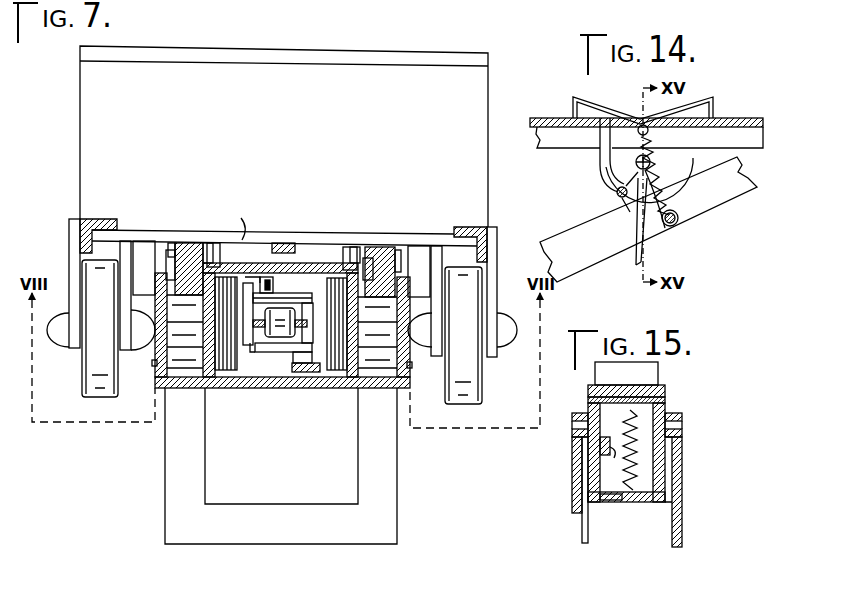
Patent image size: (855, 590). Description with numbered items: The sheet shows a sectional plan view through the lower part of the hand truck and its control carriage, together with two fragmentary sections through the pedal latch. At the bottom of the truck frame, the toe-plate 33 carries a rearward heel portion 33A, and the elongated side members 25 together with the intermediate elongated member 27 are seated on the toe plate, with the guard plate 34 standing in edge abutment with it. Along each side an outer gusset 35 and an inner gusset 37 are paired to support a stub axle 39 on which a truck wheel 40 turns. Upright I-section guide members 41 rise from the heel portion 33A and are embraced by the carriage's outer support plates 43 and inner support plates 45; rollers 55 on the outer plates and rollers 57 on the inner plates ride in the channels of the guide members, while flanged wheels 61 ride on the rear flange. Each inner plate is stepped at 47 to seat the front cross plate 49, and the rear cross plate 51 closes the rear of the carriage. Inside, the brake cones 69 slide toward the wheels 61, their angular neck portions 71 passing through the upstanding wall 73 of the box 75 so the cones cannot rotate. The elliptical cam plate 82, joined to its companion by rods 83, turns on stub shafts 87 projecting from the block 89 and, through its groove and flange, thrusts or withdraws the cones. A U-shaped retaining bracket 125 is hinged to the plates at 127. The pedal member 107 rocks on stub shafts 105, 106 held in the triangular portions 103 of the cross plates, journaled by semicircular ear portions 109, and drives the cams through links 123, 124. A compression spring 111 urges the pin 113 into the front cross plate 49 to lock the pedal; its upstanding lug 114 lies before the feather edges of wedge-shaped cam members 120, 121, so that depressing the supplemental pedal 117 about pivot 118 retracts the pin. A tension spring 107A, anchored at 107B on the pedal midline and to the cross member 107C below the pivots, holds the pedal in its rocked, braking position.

In FIG. 7, the toe-plate 33 is at (271, 149).
In FIG. 7, the heel portion 33A is at (142, 247).
In FIG. 7, the side members 25 is at (86, 218).
In FIG. 7, the outer gussets 35 is at (69, 236).
In FIG. 7, the inner gussets 37 is at (128, 232).
In FIG. 7, the truck wheel 40 is at (93, 326).
In FIG. 7, the stub axle 39 is at (80, 348).
In FIG. 7, the inner support plates 45 is at (158, 286).
In FIG. 7, the wheels 61 is at (174, 321).
In FIG. 7, the rollers 55 is at (172, 262).
In FIG. 7, the rollers 57 is at (209, 247).
In FIG. 7, the guide members 41 is at (190, 250).
In FIG. 7, the guard plate 34 is at (234, 223).
In FIG. 7, the intermediate elongated member 27 is at (288, 242).
In FIG. 7, the step 47 is at (216, 253).
In FIG. 7, the outer support plates 43 is at (210, 382).
In FIG. 7, the brake cones 69 is at (246, 352).
In FIG. 7, the angular neck portion 71 is at (250, 277).
In FIG. 7, the link 123 is at (273, 280).
In FIG. 7, the cam plate 82 is at (276, 297).
In FIG. 7, the rods 83 is at (278, 338).
In FIG. 7, the stub shafts 87 is at (268, 350).
In FIG. 7, the upstanding wall 73 is at (248, 353).
In FIG. 7, the box 75 is at (256, 353).
In FIG. 7, the block 89 is at (312, 362).
In FIG. 7, the link 124 is at (318, 372).
In FIG. 15, the link 124 is at (582, 538).
In FIG. 7, the retaining bracket 125 is at (390, 488).
In FIG. 7, the hinge connection 127 is at (155, 367).
In FIG. 14, the pedal member 107 is at (735, 130).
In FIG. 15, the pedal member 107 is at (665, 391).
In FIG. 14, the supplemental pedal 117 is at (697, 98).
In FIG. 15, the supplemental pedal 117 is at (650, 372).
In FIG. 14, the pivot 118 is at (641, 116).
In FIG. 14, the anchor 107B is at (651, 141).
In FIG. 15, the anchor 107B is at (667, 405).
In FIG. 14, the ear portions 109 is at (598, 158).
In FIG. 15, the ear portions 109 is at (588, 472).
In FIG. 14, the stub shaft 105 is at (637, 166).
In FIG. 15, the stub shaft 105 is at (572, 430).
In FIG. 14, the wedge-shaped cam member 120 is at (637, 160).
In FIG. 14, the triangular portion 103 is at (675, 186).
In FIG. 14, the compression spring 111 is at (618, 195).
In FIG. 14, the pin 113 is at (625, 201).
In FIG. 14, the upstanding lug 114 is at (634, 257).
In FIG. 14, the wedge-shaped cam member 121 is at (649, 183).
In FIG. 15, the wedge-shaped cam member 121 is at (606, 455).
In FIG. 14, the tension spring 107A is at (676, 218).
In FIG. 15, the tension spring 107A is at (630, 503).
In FIG. 14, the cross member 107C is at (672, 226).
In FIG. 15, the cross member 107C is at (600, 503).
In FIG. 14, the front cross plate 49 is at (707, 210).
In FIG. 15, the front cross plate 49 is at (572, 508).
In FIG. 15, the stub shaft 106 is at (683, 432).
In FIG. 15, the rear cross plate 51 is at (682, 522).